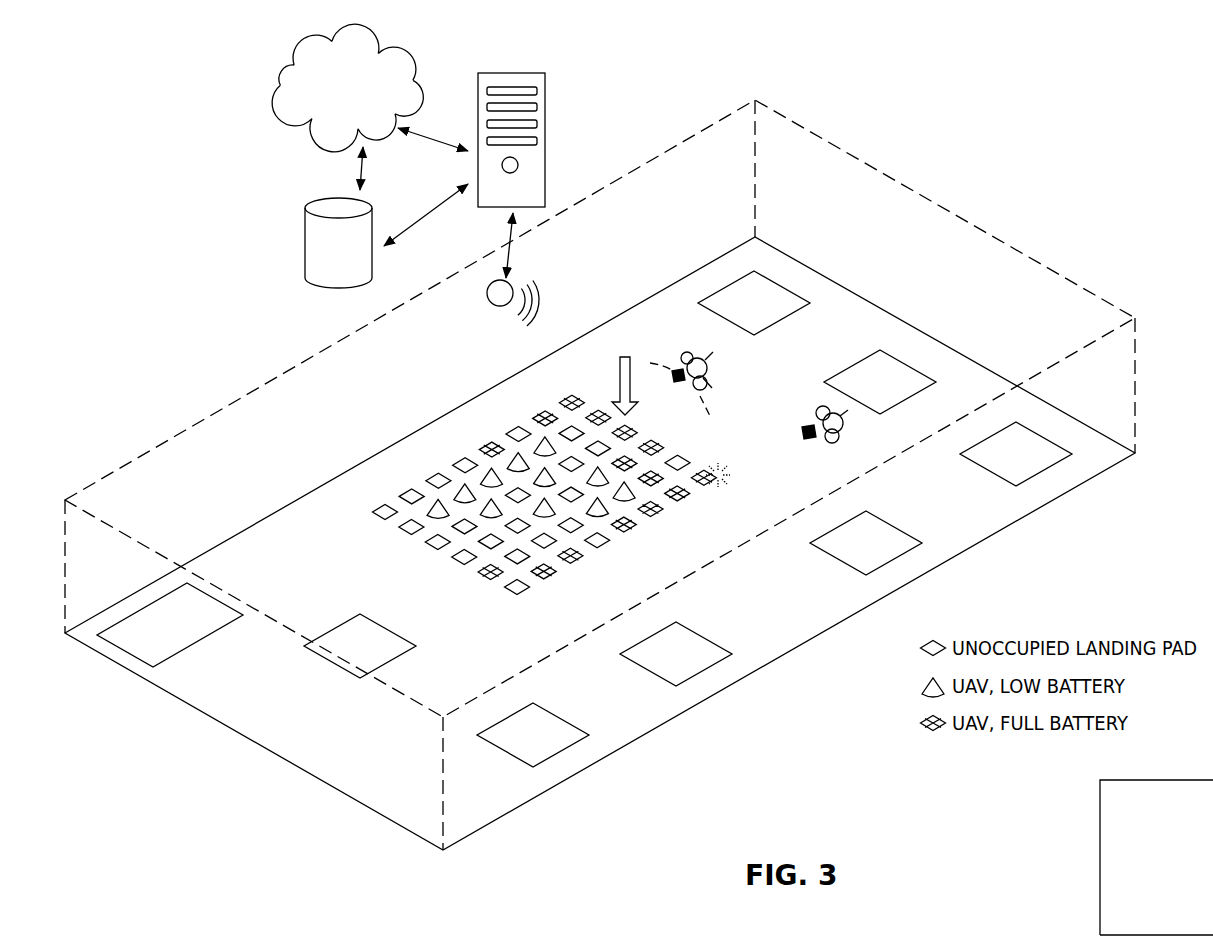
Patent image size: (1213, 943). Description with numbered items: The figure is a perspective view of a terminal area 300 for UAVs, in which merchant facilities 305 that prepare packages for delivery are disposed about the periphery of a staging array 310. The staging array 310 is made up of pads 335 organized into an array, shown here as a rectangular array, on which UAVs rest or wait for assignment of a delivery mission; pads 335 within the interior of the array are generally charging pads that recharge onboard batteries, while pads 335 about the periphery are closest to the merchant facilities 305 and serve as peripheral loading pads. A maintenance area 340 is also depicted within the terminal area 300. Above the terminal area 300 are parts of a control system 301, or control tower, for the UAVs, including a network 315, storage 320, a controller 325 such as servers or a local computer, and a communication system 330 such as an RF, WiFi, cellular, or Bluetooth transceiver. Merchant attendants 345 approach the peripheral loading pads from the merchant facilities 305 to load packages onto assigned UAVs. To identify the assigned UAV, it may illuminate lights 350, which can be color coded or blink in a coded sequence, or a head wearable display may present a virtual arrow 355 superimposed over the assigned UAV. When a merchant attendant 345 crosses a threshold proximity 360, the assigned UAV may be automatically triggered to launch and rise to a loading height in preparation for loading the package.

The terminal area 300 is at (1070, 68).
The control system 301 is at (262, 225).
The merchant facility 305 is at (688, 519).
The staging array 310 is at (519, 604).
The network 315 is at (347, 88).
The storage 320 is at (338, 243).
The controller 325 is at (546, 75).
The communication system 330 is at (487, 292).
The pad 335 is at (410, 491).
The maintenance area 340 is at (170, 625).
The merchant attendant 345 is at (690, 357).
The light 350 is at (726, 497).
The virtual arrow 355 is at (615, 358).
The threshold proximity 360 is at (710, 416).